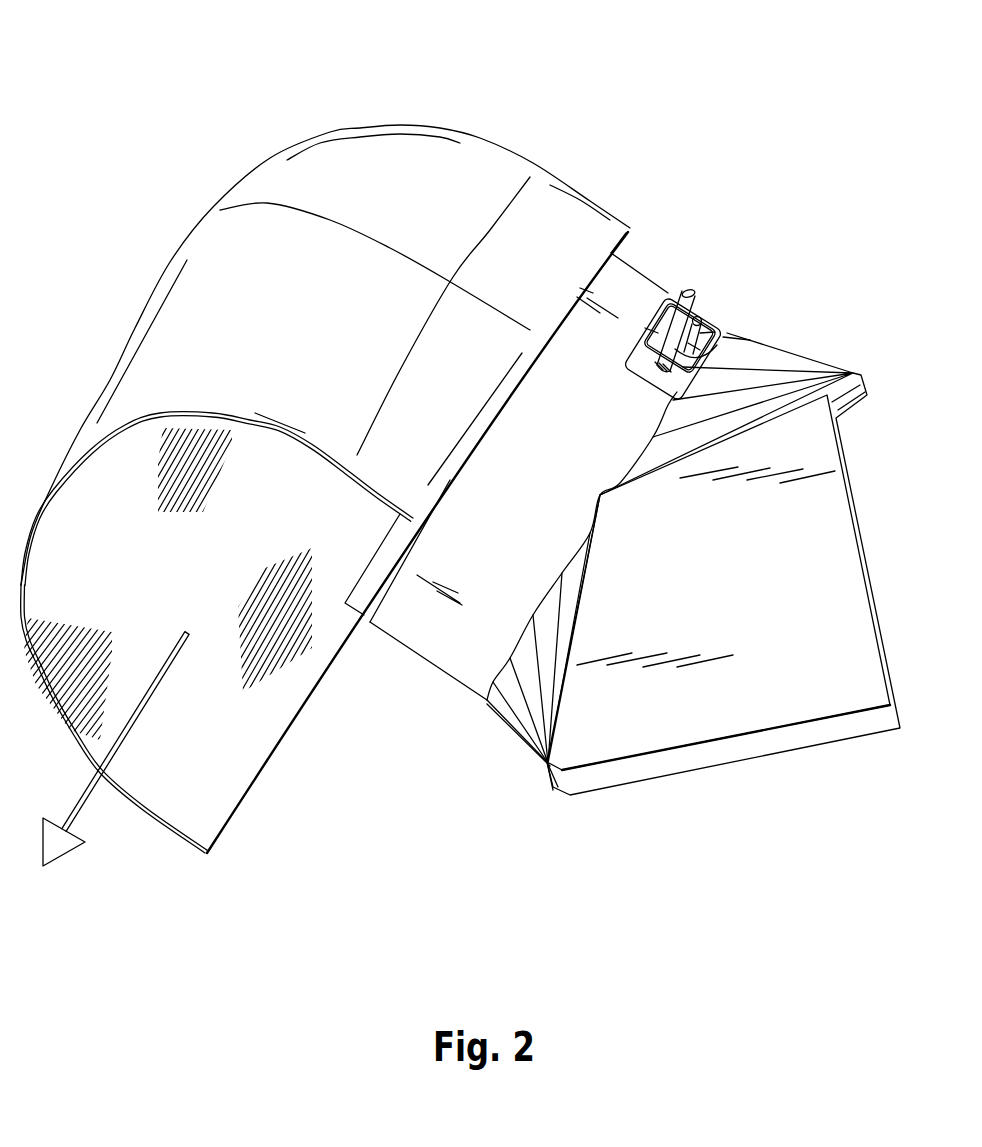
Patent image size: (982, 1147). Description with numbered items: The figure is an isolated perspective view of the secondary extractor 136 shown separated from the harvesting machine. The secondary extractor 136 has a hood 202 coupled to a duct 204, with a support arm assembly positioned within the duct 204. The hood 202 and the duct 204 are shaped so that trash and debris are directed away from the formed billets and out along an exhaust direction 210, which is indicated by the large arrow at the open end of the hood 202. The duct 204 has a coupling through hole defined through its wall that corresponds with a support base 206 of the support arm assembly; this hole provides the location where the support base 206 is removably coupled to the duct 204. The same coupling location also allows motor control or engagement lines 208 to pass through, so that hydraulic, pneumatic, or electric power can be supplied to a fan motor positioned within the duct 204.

The secondary extractor 136 is at (163, 117).
The hood 202 is at (478, 177).
The duct 204 is at (447, 623).
The support base 206 is at (717, 318).
The motor control or engagement lines 208 is at (700, 316).
The exhaust direction 210 is at (93, 803).